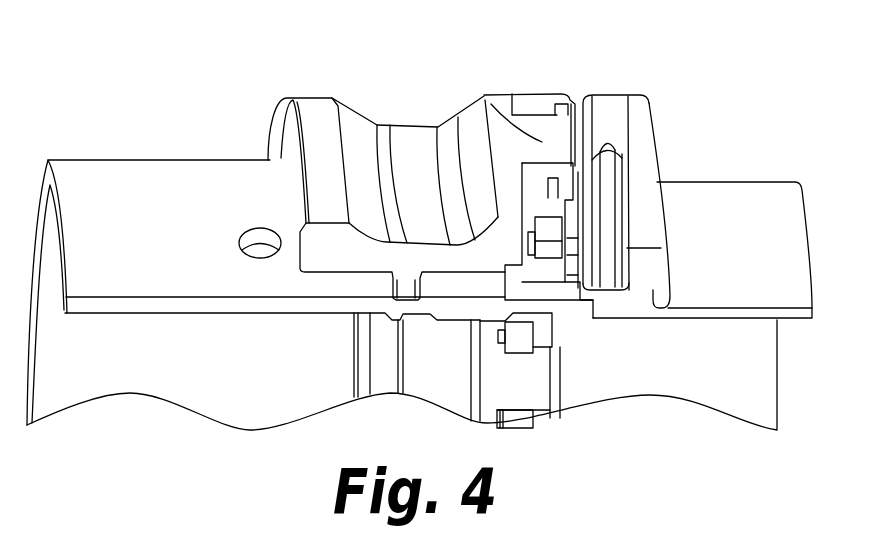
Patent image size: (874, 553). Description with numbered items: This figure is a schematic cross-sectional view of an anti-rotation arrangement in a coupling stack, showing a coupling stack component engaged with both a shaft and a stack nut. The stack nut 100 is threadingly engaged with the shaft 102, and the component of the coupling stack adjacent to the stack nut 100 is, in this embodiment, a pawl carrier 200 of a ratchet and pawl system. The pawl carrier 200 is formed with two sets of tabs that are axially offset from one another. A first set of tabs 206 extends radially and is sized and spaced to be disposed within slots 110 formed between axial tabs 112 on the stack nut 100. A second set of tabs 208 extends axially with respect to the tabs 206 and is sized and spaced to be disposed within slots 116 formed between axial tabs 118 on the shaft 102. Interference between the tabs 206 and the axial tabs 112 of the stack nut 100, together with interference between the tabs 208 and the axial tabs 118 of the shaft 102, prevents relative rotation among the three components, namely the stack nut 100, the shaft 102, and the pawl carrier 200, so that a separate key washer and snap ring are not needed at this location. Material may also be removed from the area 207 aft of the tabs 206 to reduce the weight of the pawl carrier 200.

The stack nut 100 is at (305, 97).
The shaft 102 is at (110, 160).
The slot 110 is at (549, 74).
The axial tab 112 is at (523, 97).
The slot 116 is at (552, 274).
The axial tab 118 is at (542, 342).
The pawl carrier 200 is at (655, 128).
The first set of tabs 206 is at (595, 85).
The area aft of the tabs 207 is at (606, 84).
The second set of tabs 208 is at (546, 224).